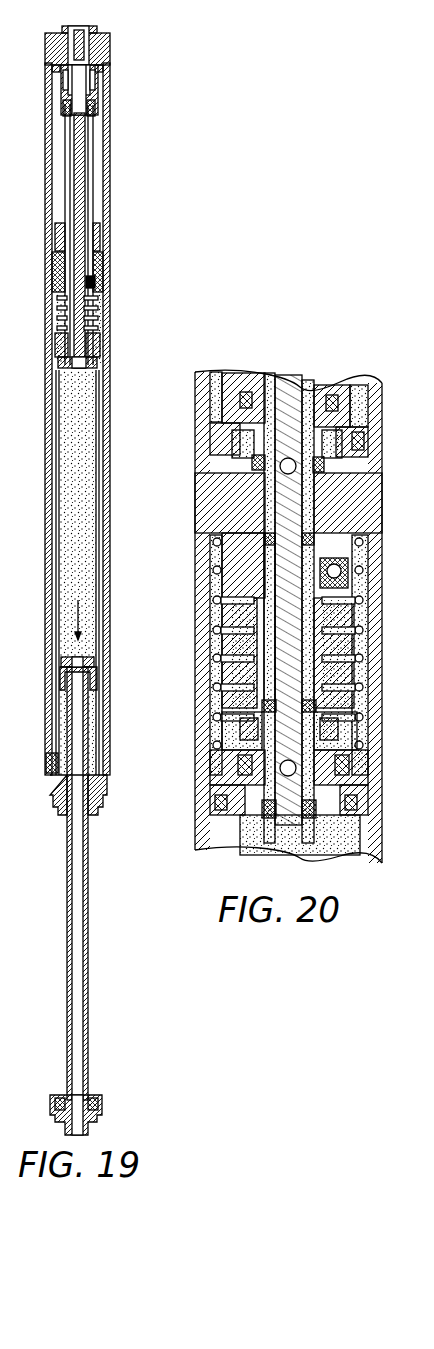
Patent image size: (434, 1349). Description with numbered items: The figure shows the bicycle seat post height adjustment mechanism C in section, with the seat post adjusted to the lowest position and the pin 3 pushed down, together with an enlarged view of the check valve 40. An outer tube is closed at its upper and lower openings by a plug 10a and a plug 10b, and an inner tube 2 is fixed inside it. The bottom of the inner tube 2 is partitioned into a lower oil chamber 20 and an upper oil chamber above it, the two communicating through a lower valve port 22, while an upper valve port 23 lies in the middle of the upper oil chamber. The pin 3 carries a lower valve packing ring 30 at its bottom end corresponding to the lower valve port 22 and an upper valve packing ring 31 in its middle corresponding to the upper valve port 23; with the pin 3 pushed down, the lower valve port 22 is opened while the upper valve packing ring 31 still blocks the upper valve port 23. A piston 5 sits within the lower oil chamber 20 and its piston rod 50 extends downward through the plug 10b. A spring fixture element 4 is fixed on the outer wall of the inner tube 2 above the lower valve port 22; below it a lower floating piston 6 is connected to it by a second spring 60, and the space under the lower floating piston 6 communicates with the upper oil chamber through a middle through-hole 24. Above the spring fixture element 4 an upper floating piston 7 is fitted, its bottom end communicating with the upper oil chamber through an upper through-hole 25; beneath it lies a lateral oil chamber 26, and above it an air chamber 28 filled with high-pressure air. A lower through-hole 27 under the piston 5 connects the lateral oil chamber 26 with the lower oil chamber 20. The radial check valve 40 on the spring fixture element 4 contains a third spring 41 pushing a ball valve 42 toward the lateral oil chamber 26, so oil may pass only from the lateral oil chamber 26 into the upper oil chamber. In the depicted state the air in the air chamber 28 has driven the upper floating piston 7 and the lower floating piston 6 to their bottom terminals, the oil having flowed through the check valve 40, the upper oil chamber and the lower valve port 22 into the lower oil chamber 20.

In FIG. 19, the plug 10a is at (110, 48).
In FIG. 19, the air chamber 28 is at (98, 92).
In FIG. 19, the bicycle seat post height adjustment mechanism C is at (96, 110).
In FIG. 19, the inner tube 2 is at (93, 155).
In FIG. 20, the inner tube 2 is at (310, 392).
In FIG. 19, the pin 3 is at (85, 192).
In FIG. 20, the pin 3 is at (290, 376).
In FIG. 19, the upper floating piston 7 is at (100, 230).
In FIG. 20, the upper floating piston 7 is at (340, 405).
In FIG. 19, the upper valve packing ring 31 is at (86, 275).
In FIG. 20, the upper valve packing ring 31 is at (314, 540).
In FIG. 19, the check valve 40 is at (95, 282).
In FIG. 19, the lower floating piston 6 is at (98, 338).
In FIG. 20, the lower floating piston 6 is at (368, 759).
In FIG. 19, the lower valve packing ring 30 is at (97, 362).
In FIG. 20, the lower valve packing ring 30 is at (270, 822).
In FIG. 19, the piston 5 is at (97, 660).
In FIG. 19, the lower oil chamber 20 is at (99, 742).
In FIG. 20, the lower oil chamber 20 is at (360, 850).
In FIG. 19, the lower through-hole 27 is at (45, 763).
In FIG. 19, the plug 10b is at (97, 800).
In FIG. 19, the piston rod 50 is at (66, 1053).
In FIG. 20, the lateral oil chamber 26 is at (368, 444).
In FIG. 20, the upper through-hole 25 is at (252, 462).
In FIG. 20, the spring fixture element 4 is at (330, 500).
In FIG. 20, the third spring 41 is at (375, 570).
In FIG. 20, the ball valve 42 is at (341, 576).
In FIG. 20, the second spring 60 is at (217, 566).
In FIG. 20, the upper valve port 23 is at (265, 578).
In FIG. 20, the middle through-hole 24 is at (235, 772).
In FIG. 20, the lower valve port 22 is at (215, 838).